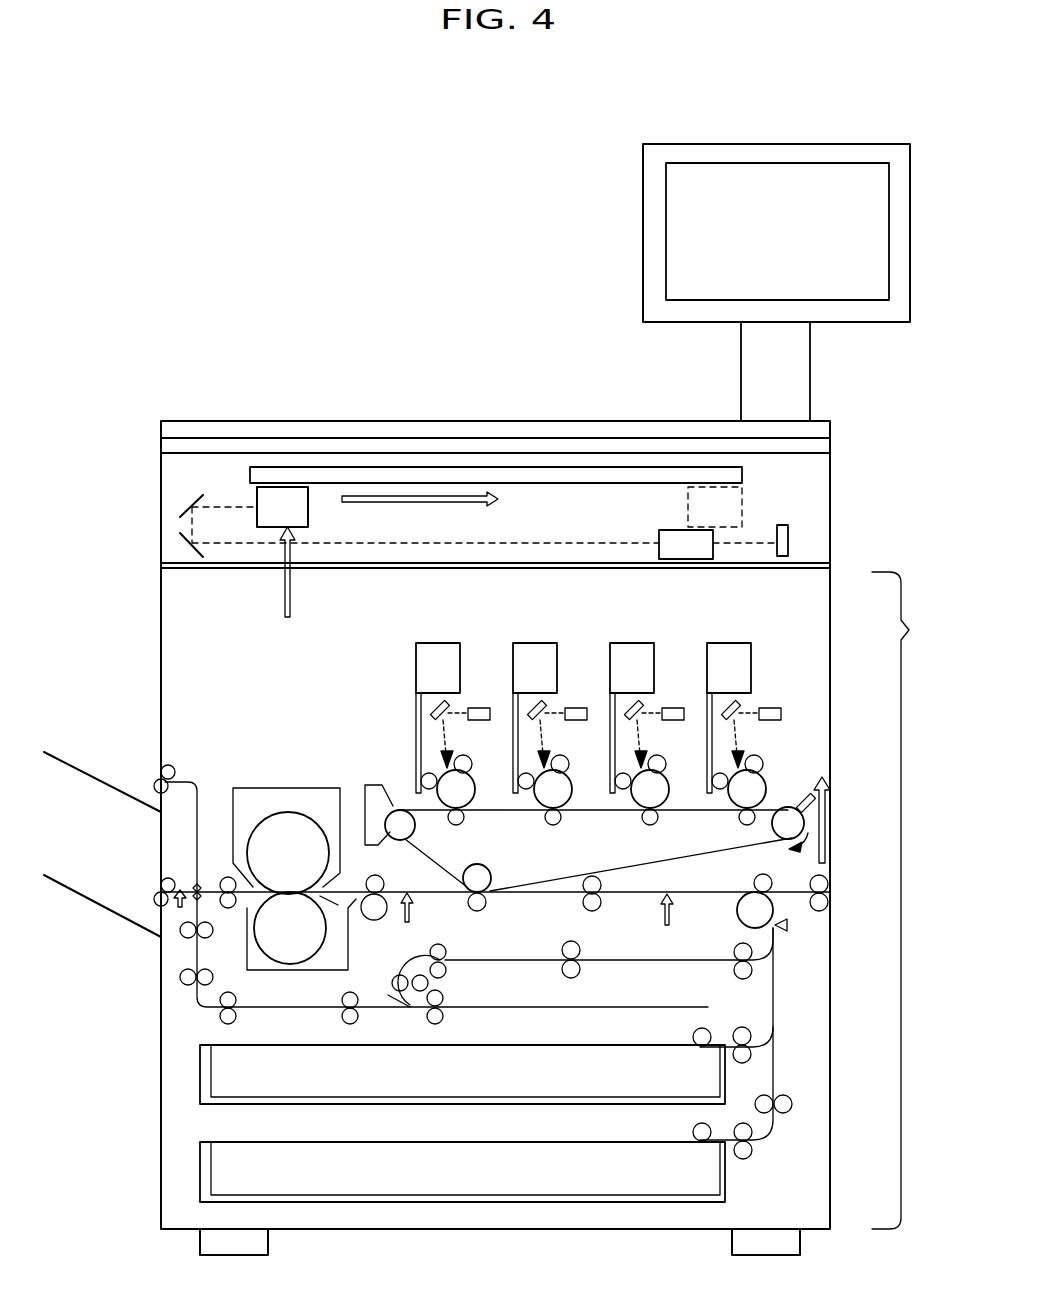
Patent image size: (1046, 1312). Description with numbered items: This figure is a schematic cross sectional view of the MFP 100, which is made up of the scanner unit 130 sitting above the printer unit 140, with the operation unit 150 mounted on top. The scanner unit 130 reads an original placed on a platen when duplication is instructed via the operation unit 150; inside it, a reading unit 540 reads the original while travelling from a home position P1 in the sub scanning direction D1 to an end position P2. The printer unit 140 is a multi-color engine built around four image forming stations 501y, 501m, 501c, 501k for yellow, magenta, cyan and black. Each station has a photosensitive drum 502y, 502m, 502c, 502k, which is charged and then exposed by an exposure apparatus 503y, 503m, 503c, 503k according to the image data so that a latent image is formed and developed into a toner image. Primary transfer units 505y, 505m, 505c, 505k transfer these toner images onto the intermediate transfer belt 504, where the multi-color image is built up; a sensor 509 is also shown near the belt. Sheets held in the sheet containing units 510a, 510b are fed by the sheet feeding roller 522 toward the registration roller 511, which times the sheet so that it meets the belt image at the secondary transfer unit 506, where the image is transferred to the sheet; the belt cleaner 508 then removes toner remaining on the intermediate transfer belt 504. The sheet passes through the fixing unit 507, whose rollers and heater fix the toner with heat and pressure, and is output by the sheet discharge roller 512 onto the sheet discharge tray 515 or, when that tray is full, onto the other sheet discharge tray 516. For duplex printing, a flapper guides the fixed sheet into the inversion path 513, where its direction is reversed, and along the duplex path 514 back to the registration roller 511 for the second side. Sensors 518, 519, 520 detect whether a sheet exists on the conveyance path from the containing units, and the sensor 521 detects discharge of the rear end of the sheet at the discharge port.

The MFP 100 is at (845, 110).
The operation unit 150 is at (643, 227).
The scanner unit 130 is at (830, 492).
The printer unit 140 is at (915, 900).
The reading unit 540 is at (308, 512).
The home position P1 is at (284, 605).
The end position P2 is at (742, 497).
The sub scanning direction D1 is at (440, 500).
The image forming station 501y is at (434, 643).
The image forming station 501m is at (531, 643).
The image forming station 501c is at (628, 643).
The image forming station 501k is at (725, 643).
The photosensitive drum 502y is at (446, 775).
The photosensitive drum 502m is at (543, 775).
The photosensitive drum 502c is at (640, 775).
The photosensitive drum 502k is at (737, 775).
The exposure apparatus 503y is at (479, 708).
The exposure apparatus 503m is at (576, 708).
The exposure apparatus 503c is at (673, 708).
The exposure apparatus 503k is at (770, 708).
The intermediate transfer belt 504 is at (683, 852).
The primary transfer unit 505y is at (457, 825).
The primary transfer unit 505m is at (553, 826).
The primary transfer unit 505c is at (648, 825).
The primary transfer unit 505k is at (741, 817).
The secondary transfer unit 506 is at (488, 894).
The fixing unit 507 is at (264, 788).
The belt cleaner 508 is at (365, 793).
The sensor 509 is at (799, 797).
The sheet containing unit 510a is at (462, 1074).
The sheet containing unit 510b is at (462, 1172).
The registration roller 511 is at (600, 904).
The sheet discharge roller 512 is at (162, 886).
The inversion path 513 is at (599, 1007).
The duplex path 514 is at (487, 963).
The sheet discharge tray 515 is at (106, 907).
The sheet discharge tray 516 is at (106, 785).
The sensor 518 is at (787, 925).
The sensor 519 is at (495, 923).
The sensor 520 is at (393, 915).
The sensor 521 is at (179, 907).
The sheet feeding roller 522 is at (694, 1037).